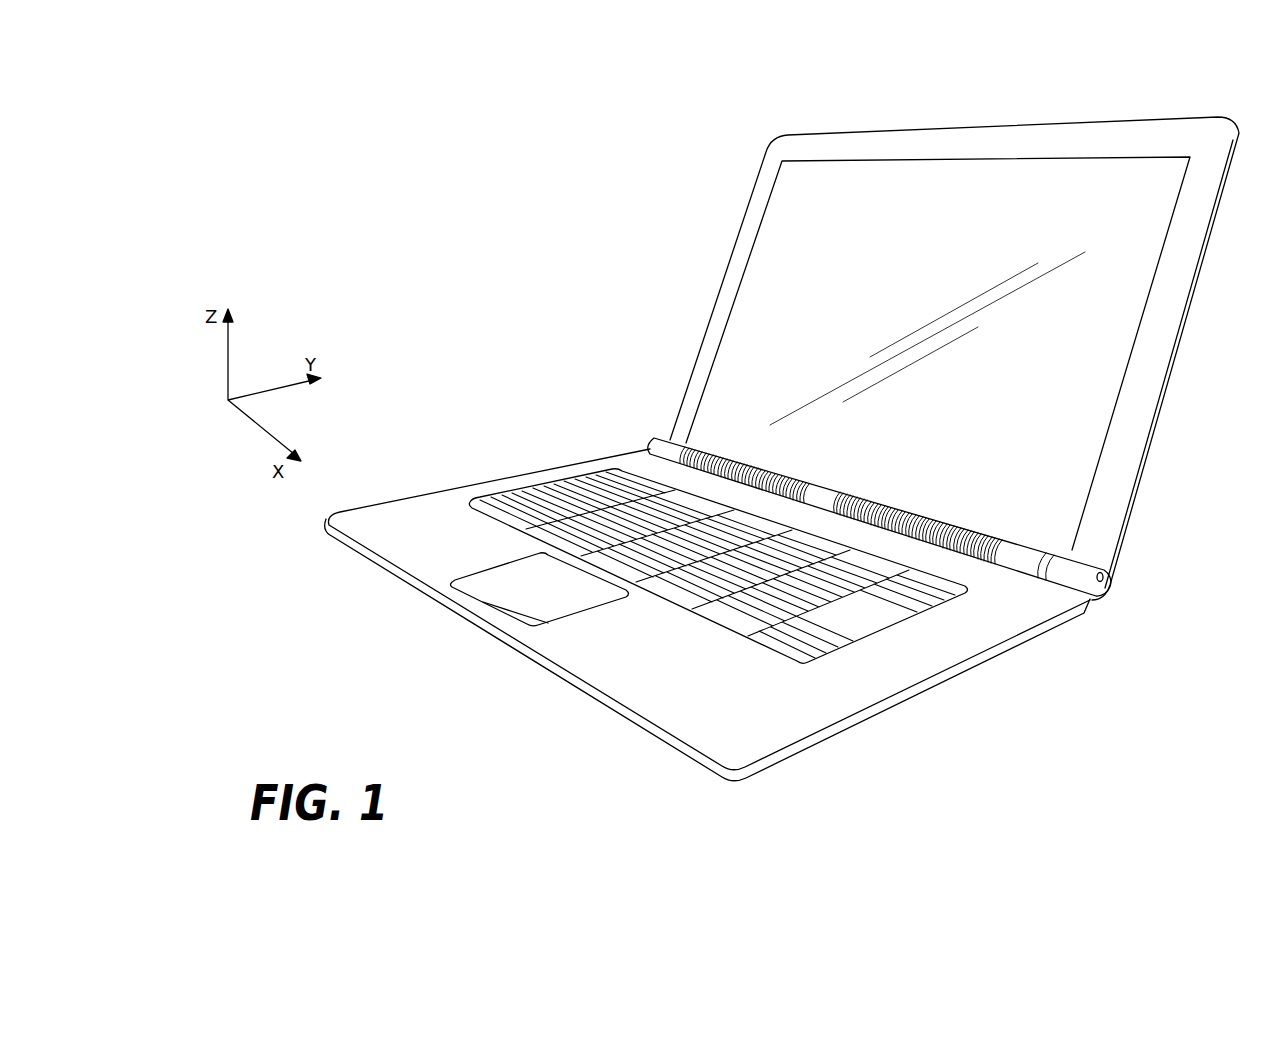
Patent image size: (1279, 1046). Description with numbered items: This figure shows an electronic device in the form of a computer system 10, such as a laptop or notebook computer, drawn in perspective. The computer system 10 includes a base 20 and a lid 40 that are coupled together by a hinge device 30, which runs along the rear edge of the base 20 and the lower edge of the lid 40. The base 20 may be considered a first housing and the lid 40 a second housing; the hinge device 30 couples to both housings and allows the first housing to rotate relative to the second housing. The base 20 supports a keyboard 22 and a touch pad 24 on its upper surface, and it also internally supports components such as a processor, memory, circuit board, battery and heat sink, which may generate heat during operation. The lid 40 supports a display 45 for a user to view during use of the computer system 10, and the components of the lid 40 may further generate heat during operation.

The computer system 10 is at (549, 129).
The base 20 is at (820, 740).
The keyboard 22 is at (753, 640).
The touch pad 24 is at (567, 603).
The hinge device 30 is at (662, 440).
The lid 40 is at (1200, 273).
The display 45 is at (987, 193).